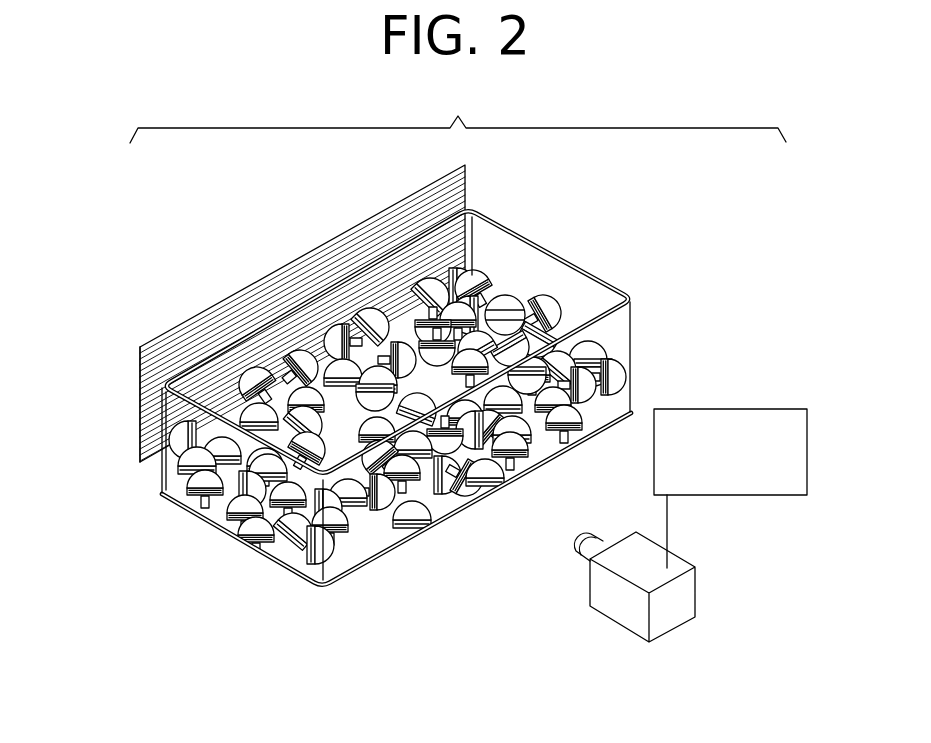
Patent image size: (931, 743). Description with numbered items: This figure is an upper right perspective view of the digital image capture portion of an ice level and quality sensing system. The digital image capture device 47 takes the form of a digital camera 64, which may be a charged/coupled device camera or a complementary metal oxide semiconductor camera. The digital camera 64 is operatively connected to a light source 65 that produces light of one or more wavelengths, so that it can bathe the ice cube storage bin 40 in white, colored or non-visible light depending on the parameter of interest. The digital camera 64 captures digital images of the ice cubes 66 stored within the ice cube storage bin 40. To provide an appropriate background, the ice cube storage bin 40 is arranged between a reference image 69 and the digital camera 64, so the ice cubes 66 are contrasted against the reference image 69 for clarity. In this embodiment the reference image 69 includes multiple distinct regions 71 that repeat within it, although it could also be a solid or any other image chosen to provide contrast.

The ice cube storage bin 40 is at (645, 318).
The digital image capture device 47 is at (673, 570).
The digital camera 64 is at (610, 602).
The light source 65 is at (746, 409).
The ice cubes 66 is at (518, 265).
The reference image 69 is at (160, 290).
The distinct regions 71 is at (150, 355).